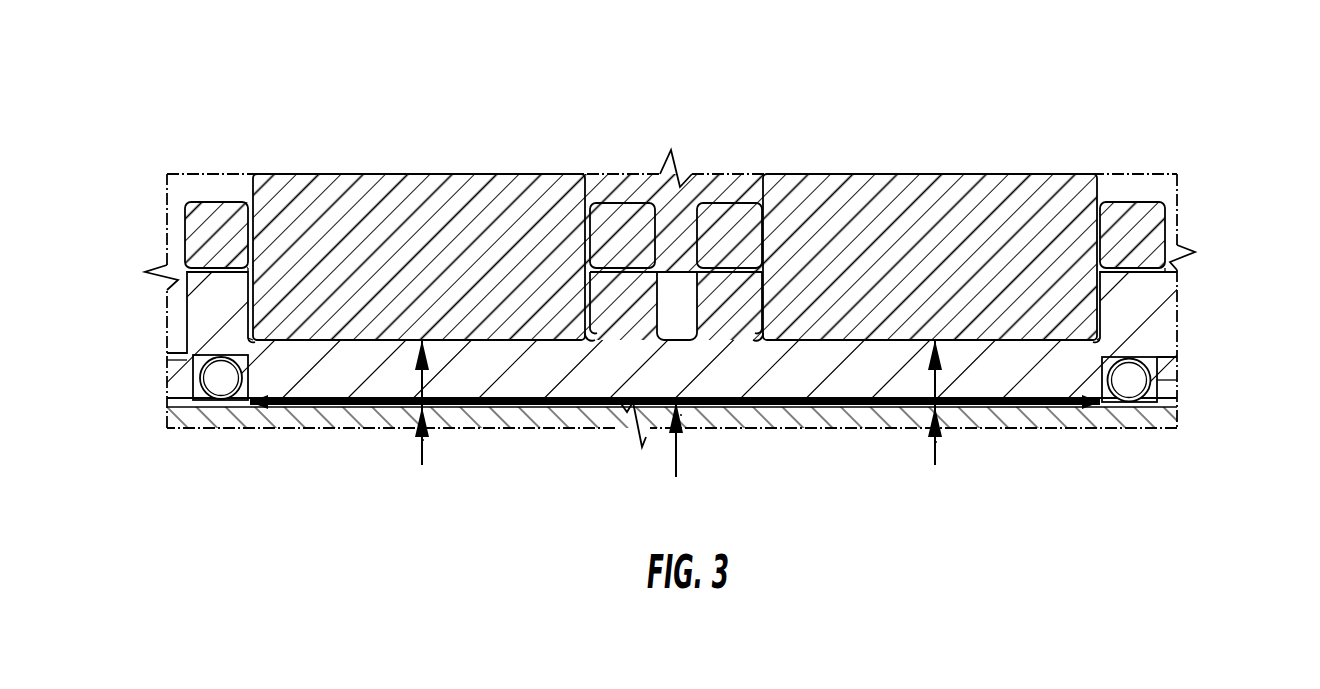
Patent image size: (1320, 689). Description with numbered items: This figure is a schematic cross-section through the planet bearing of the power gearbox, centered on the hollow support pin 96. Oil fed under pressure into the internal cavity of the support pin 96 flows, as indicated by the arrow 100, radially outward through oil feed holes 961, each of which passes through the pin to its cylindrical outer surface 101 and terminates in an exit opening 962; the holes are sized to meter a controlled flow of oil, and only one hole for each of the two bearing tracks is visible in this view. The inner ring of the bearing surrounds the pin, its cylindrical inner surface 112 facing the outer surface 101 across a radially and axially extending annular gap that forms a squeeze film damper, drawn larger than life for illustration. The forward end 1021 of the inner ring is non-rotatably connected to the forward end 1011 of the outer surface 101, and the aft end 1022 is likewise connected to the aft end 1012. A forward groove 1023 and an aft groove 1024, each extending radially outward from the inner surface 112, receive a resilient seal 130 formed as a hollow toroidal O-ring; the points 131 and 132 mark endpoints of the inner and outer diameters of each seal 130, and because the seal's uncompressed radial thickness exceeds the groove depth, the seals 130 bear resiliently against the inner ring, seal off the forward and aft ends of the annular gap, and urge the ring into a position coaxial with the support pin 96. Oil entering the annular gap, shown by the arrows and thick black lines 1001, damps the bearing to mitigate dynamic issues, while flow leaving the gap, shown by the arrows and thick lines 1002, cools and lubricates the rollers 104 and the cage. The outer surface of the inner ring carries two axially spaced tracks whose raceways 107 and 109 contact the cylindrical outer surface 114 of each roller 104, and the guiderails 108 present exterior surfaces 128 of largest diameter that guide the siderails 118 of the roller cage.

The support pin 96 is at (347, 410).
The arrow representing oil flow from the internal cavity 100 is at (677, 457).
The cylindrical outer surface of the support pin 101 is at (671, 413).
The rollers 104 is at (455, 192).
The roller raceway 107 is at (343, 340).
The guiderail 108 is at (703, 290).
The roller raceway 109 is at (927, 342).
The cylindrical inner surface of the inner ring 112 is at (557, 392).
The cylindrical outer surface of the roller 114 is at (553, 350).
The siderail 118 is at (622, 220).
The exterior surface of the guiderail 128 is at (222, 272).
The resilient seal 130 is at (250, 368).
The endpoint of the inner diameter of the resilient seal 131 is at (220, 405).
The endpoint of the outer diameter of the resilient seal 132 is at (222, 340).
The oil feed hole 961 is at (424, 442).
The exit opening 962 is at (443, 397).
The oil flow into the annular gap 1001 is at (272, 407).
The oil flow from the annular gap to the rollers 1002 is at (433, 340).
The forward end of the cylindrical outer surface of the support pin 1011 is at (168, 390).
The aft end of the cylindrical outer surface of the support pin 1012 is at (1157, 400).
The forward end of the inner ring 1021 is at (177, 365).
The aft end of the inner ring 1022 is at (1167, 378).
The forward groove 1023 is at (193, 362).
The aft groove 1024 is at (1157, 360).